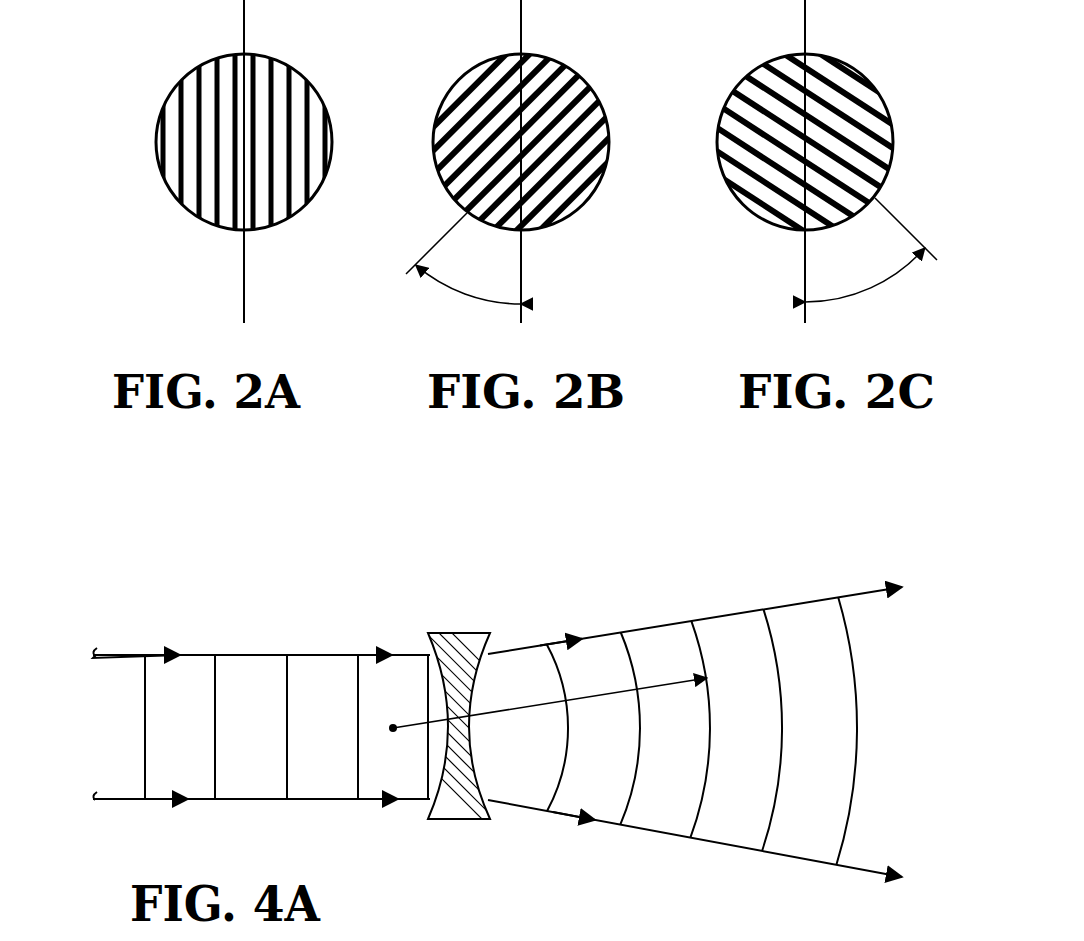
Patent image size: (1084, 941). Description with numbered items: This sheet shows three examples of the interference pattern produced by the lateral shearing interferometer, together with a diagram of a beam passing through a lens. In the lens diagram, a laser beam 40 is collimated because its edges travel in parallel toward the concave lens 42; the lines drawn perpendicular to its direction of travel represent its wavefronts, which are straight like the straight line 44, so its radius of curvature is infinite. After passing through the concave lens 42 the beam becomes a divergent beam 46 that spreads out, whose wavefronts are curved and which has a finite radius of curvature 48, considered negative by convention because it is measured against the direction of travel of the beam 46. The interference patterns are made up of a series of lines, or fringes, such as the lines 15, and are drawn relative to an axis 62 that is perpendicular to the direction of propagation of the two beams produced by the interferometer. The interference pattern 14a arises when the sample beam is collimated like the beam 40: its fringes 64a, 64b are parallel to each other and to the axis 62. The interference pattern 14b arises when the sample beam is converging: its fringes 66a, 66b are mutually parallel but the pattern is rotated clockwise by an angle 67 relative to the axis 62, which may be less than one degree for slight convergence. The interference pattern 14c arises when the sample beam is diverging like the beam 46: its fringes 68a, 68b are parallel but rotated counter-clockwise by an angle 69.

In FIG. 2A, the interference pattern 14a is at (150, 76).
In FIG. 2B, the interference pattern 14b is at (446, 64).
In FIG. 2C, the interference pattern 14c is at (733, 66).
In FIG. 2A, the lines 15 is at (210, 213).
In FIG. 2A, the axis 62 is at (247, 31).
In FIG. 2B, the axis 62 is at (525, 30).
In FIG. 2C, the axis 62 is at (809, 29).
In FIG. 2A, the interference fringe 64a is at (290, 137).
In FIG. 2A, the interference fringe 64b is at (308, 167).
In FIG. 2B, the interference fringe 66a is at (603, 112).
In FIG. 2B, the interference fringe 66b is at (593, 143).
In FIG. 2B, the angle 67 is at (487, 300).
In FIG. 2C, the interference fringe 68a is at (867, 113).
In FIG. 2C, the interference fringe 68b is at (877, 140).
In FIG. 2C, the angle 69 is at (862, 292).
In FIG. 4A, the laser beam 40 is at (197, 738).
In FIG. 4A, the concave lens 42 is at (467, 632).
In FIG. 4A, the straight line 44 is at (287, 678).
In FIG. 4A, the beam 46 is at (925, 742).
In FIG. 4A, the radius of curvature 48 is at (680, 687).